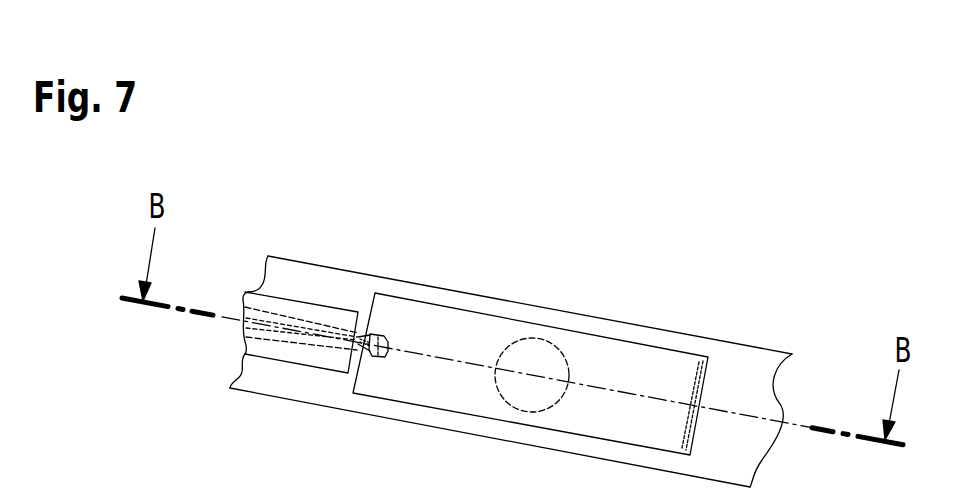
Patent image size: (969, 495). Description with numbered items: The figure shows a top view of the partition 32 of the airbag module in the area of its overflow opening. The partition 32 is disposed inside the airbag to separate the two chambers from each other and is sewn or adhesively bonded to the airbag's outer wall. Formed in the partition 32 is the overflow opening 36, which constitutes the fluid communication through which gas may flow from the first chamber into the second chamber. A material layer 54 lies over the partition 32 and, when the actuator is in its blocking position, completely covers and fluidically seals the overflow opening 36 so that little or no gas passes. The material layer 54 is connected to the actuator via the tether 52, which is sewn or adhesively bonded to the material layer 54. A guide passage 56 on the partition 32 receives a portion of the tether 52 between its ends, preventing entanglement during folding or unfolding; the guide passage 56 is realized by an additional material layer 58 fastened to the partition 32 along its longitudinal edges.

The partition 32 is at (731, 358).
The overflow opening 36 is at (527, 352).
The tether 52 is at (362, 336).
The material layer 54 is at (616, 358).
The guide passage 56 is at (320, 327).
The additional material layer 58 is at (272, 300).